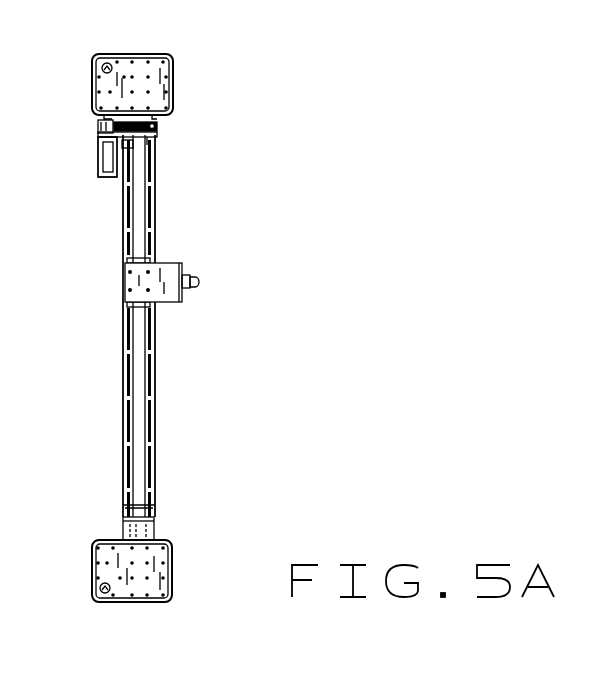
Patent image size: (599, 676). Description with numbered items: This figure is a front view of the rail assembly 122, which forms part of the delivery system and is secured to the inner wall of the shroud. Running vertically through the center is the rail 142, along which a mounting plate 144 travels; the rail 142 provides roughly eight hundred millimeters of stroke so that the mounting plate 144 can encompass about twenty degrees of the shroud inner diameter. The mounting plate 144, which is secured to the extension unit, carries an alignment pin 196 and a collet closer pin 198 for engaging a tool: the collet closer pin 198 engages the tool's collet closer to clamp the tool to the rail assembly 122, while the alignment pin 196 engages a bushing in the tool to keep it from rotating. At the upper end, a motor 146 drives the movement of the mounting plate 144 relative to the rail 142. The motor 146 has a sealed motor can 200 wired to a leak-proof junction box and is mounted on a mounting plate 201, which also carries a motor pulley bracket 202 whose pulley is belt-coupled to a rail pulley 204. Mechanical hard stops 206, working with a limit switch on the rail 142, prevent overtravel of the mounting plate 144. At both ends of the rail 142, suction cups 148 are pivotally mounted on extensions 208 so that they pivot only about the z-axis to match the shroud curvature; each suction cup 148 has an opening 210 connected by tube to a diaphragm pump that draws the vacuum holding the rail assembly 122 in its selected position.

The rail assembly 122 is at (107, 331).
The rail 142 is at (157, 397).
The mounting plate 144 is at (172, 272).
The motor 146 is at (98, 166).
The suction cups 148 is at (150, 54).
The alignment pin 196 is at (187, 293).
The collet closer pin 198 is at (198, 278).
The sealed motor can 200 is at (108, 177).
The mounting plate 201 is at (96, 150).
The motor pulley bracket 202 is at (97, 122).
The rail pulley 204 is at (158, 127).
The mechanical hard stops 206 is at (147, 141).
The extensions 208 is at (158, 120).
The opening 210 is at (111, 65).